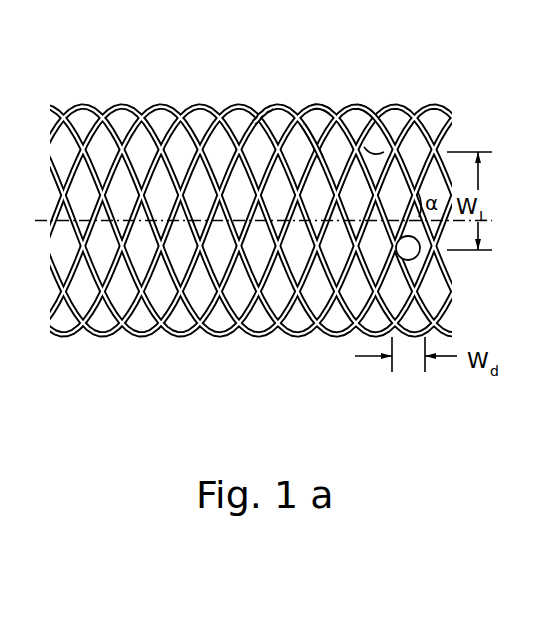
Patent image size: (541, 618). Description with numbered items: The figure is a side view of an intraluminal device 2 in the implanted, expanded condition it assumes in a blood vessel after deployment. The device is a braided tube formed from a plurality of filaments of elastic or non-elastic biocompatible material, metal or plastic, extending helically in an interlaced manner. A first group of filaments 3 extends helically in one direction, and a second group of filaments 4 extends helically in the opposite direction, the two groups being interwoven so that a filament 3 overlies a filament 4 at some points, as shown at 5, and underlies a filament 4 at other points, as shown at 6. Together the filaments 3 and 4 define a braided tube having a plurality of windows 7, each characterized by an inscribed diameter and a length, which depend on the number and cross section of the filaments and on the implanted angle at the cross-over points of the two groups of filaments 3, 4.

The intraluminal device 2 is at (118, 92).
The first group of filaments 3 is at (316, 138).
The second group of filaments 4 is at (363, 118).
The overlying cross-over point 5 is at (322, 104).
The underlying cross-over point 6 is at (398, 123).
The window 7 is at (267, 117).